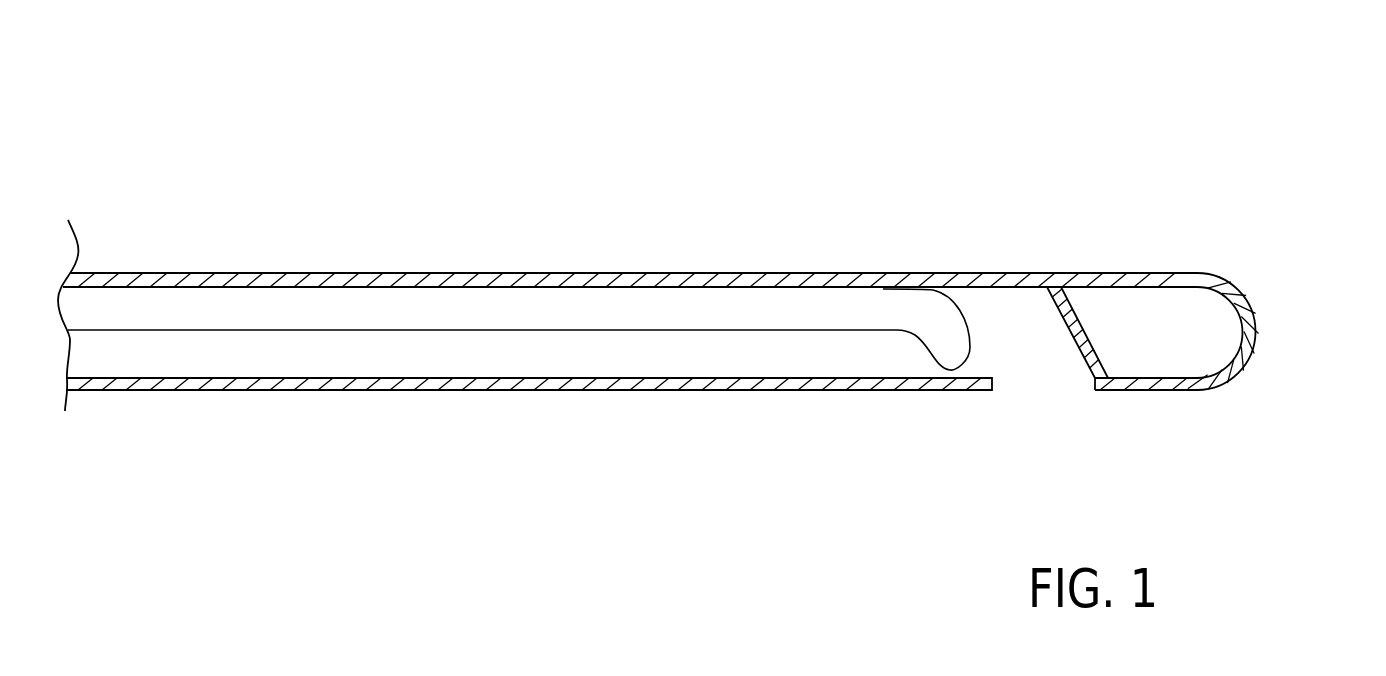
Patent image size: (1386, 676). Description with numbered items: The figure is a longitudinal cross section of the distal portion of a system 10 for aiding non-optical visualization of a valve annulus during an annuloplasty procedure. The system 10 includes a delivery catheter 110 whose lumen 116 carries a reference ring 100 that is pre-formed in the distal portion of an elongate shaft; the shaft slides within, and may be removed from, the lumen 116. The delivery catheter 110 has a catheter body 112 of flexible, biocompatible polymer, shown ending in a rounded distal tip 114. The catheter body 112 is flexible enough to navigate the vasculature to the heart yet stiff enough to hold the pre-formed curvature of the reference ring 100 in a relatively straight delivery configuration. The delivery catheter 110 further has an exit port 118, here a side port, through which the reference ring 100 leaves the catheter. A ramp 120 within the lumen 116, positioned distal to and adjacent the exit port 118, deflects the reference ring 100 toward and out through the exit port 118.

The system 10 is at (790, 100).
The reference ring 100 is at (257, 313).
The delivery catheter 110 is at (1097, 273).
The catheter body 112 is at (628, 273).
The distal tip 114 is at (1255, 332).
The lumen 116 is at (758, 355).
The exit port 118 is at (996, 382).
The ramp 120 is at (1092, 350).